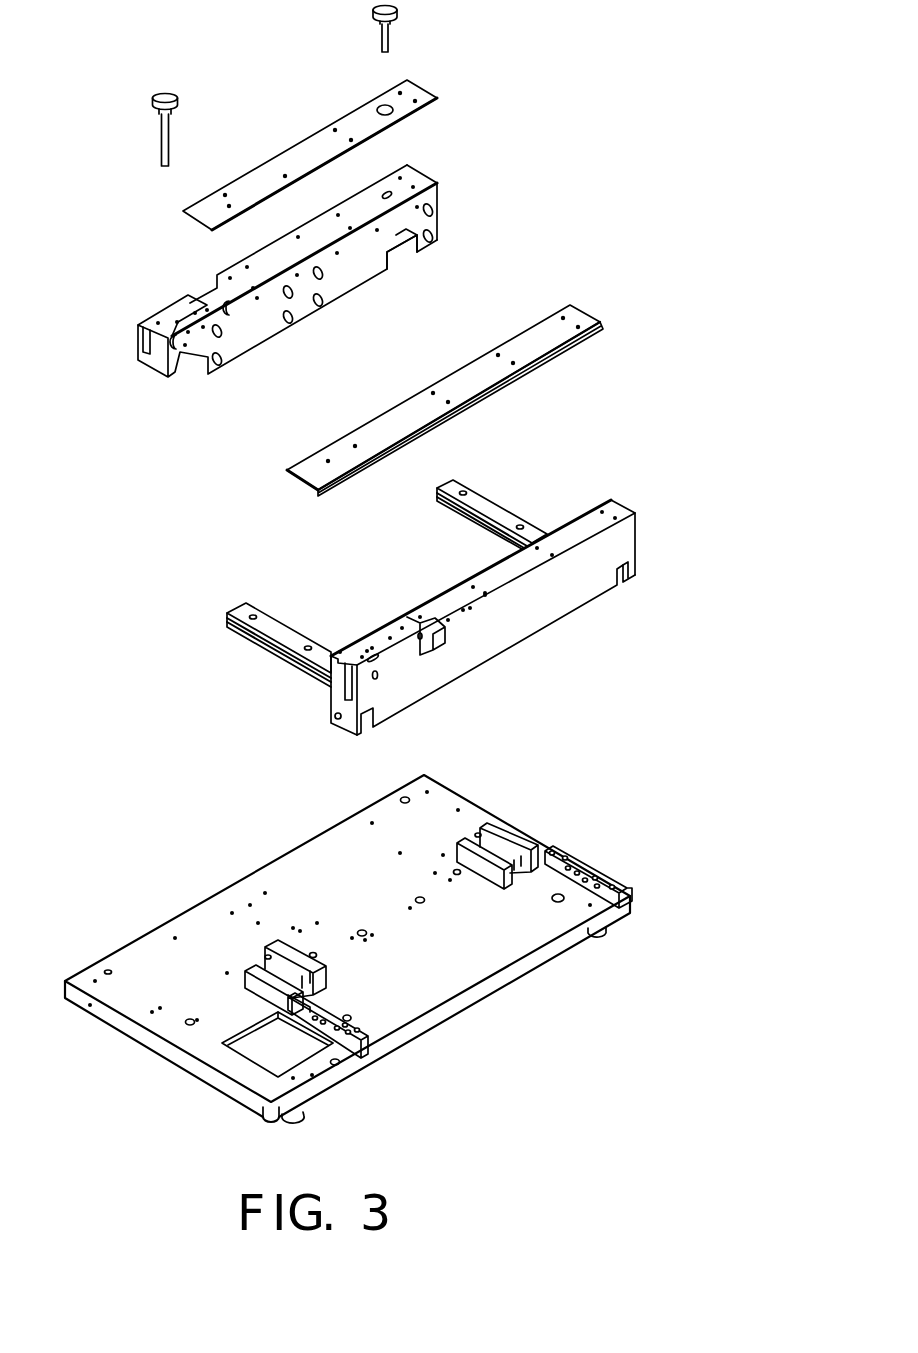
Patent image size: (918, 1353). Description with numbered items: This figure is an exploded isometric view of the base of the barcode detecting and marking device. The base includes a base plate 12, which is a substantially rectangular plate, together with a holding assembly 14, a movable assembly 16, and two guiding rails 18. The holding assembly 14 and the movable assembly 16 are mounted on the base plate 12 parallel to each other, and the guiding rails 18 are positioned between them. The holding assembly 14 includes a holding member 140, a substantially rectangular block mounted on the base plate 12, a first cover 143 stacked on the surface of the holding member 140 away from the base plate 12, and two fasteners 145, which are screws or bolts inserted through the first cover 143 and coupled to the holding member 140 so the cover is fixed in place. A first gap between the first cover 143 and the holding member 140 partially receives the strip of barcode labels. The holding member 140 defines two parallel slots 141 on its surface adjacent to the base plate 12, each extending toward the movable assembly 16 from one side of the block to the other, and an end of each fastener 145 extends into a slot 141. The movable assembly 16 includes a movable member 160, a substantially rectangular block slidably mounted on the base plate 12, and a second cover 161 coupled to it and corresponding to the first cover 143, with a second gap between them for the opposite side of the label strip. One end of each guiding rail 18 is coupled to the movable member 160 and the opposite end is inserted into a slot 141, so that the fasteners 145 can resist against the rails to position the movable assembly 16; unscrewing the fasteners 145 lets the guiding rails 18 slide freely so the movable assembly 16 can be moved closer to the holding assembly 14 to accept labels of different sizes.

The base plate 12 is at (200, 928).
The holding assembly 14 is at (499, 86).
The movable assembly 16 is at (674, 288).
The guiding rails 18 is at (488, 507).
The holding member 140 is at (413, 221).
The slots 141 is at (392, 257).
The first cover 143 is at (317, 150).
The fasteners 145 is at (157, 92).
The movable member 160 is at (618, 549).
The second cover 161 is at (468, 378).